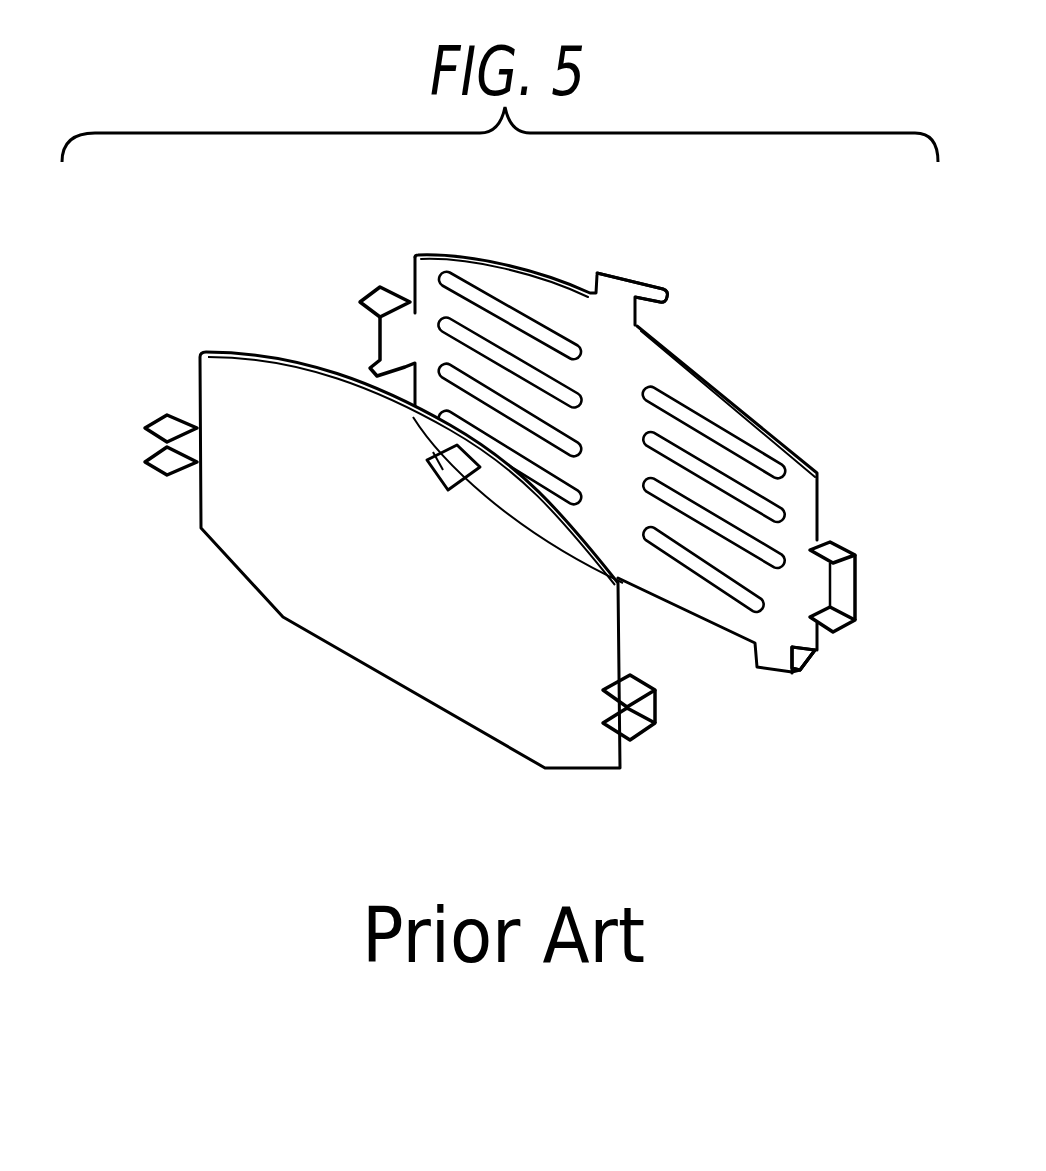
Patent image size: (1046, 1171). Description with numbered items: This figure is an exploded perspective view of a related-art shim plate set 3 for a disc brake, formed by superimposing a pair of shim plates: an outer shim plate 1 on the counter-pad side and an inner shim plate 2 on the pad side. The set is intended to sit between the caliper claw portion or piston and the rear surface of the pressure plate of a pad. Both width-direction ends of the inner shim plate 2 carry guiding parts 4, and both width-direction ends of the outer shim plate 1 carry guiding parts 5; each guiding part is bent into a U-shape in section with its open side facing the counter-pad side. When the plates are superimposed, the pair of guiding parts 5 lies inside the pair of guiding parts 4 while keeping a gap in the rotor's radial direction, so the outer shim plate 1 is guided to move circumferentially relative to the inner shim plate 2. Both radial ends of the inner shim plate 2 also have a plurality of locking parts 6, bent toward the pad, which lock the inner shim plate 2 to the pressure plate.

The outer shim plate 1 is at (413, 635).
The inner shim plate 2 is at (716, 360).
The shim plate set 3 is at (202, 299).
The guiding parts 4 is at (378, 292).
The guiding parts 5 is at (165, 422).
The locking parts 6 is at (636, 282).